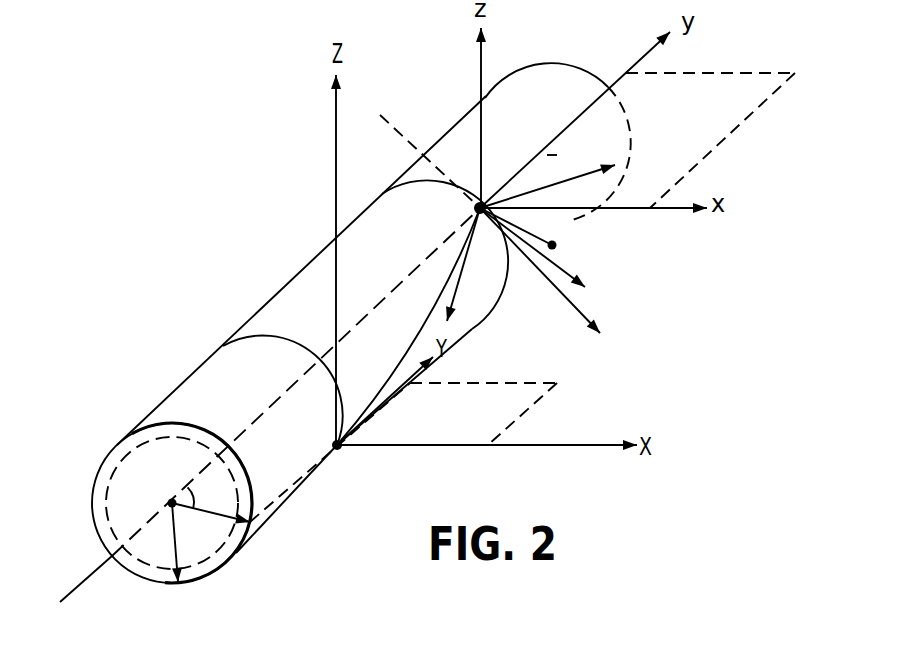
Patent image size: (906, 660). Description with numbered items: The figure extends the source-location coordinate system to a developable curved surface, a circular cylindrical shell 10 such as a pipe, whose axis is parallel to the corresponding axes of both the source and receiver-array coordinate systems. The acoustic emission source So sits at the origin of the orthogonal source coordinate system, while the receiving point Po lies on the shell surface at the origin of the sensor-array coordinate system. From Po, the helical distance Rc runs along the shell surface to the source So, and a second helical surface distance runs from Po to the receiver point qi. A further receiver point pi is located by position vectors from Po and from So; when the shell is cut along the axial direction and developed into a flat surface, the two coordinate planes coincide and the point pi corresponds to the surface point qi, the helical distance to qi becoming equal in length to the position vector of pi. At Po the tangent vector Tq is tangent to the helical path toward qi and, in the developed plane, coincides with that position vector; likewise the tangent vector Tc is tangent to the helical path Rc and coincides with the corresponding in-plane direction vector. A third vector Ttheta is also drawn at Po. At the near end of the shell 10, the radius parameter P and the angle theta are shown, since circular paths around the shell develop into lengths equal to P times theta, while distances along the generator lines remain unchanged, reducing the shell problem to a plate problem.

The circular cylindrical shell 10 is at (188, 390).
The acoustic emission source So is at (322, 442).
The receiving point Po is at (463, 214).
The helical distance to the source Rc is at (408, 326).
The shell radius parameter p P is at (179, 560).
The circumferential angle theta is at (211, 501).
The receiver point pi is at (547, 170).
The receiver point on shell surface qi is at (520, 229).
The tangent vector to helical path Tc is at (472, 297).
The tangent vector to s_i Tq is at (606, 261).
The tangent vector T-theta Ttheta is at (624, 318).